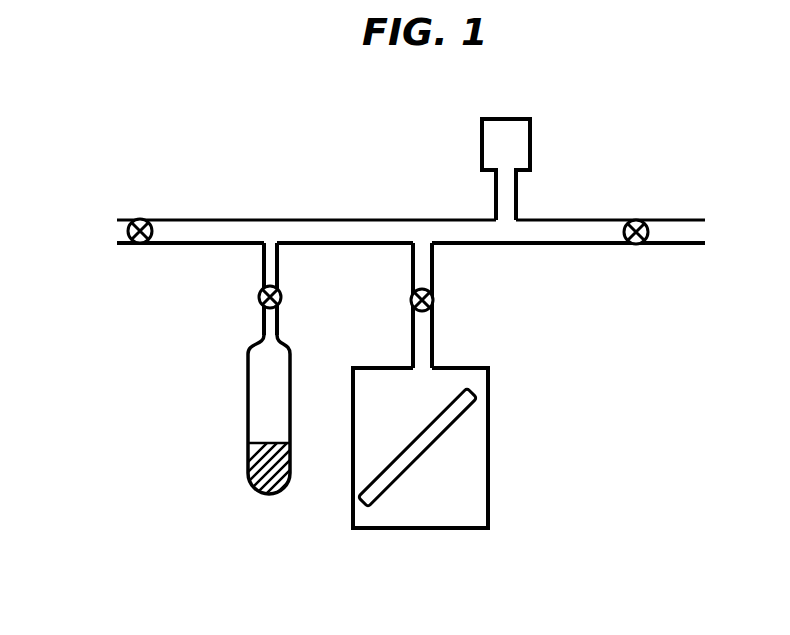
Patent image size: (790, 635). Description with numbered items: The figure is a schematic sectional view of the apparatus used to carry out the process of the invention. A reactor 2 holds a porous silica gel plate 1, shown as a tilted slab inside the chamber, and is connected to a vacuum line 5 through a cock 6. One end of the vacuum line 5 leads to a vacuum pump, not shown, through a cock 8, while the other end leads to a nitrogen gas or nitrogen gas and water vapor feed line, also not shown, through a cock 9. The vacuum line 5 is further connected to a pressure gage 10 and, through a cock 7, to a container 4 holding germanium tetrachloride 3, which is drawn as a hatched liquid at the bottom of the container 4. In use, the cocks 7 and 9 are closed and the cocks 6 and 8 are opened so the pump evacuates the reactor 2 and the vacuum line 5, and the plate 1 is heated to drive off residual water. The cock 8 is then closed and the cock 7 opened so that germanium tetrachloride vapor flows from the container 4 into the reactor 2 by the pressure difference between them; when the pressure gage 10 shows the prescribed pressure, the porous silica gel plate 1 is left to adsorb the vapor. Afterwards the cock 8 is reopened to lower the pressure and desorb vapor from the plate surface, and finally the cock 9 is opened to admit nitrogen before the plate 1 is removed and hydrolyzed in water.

The porous silica gel plate 1 is at (470, 420).
The reactor 2 is at (490, 480).
The germanium tetrachloride 3 is at (240, 473).
The container 4 is at (245, 377).
The vacuum line 5 is at (240, 196).
The cock 6 is at (435, 306).
The cock 7 is at (253, 298).
The cock 8 is at (636, 250).
The cock 9 is at (137, 248).
The pressure gage 10 is at (533, 134).